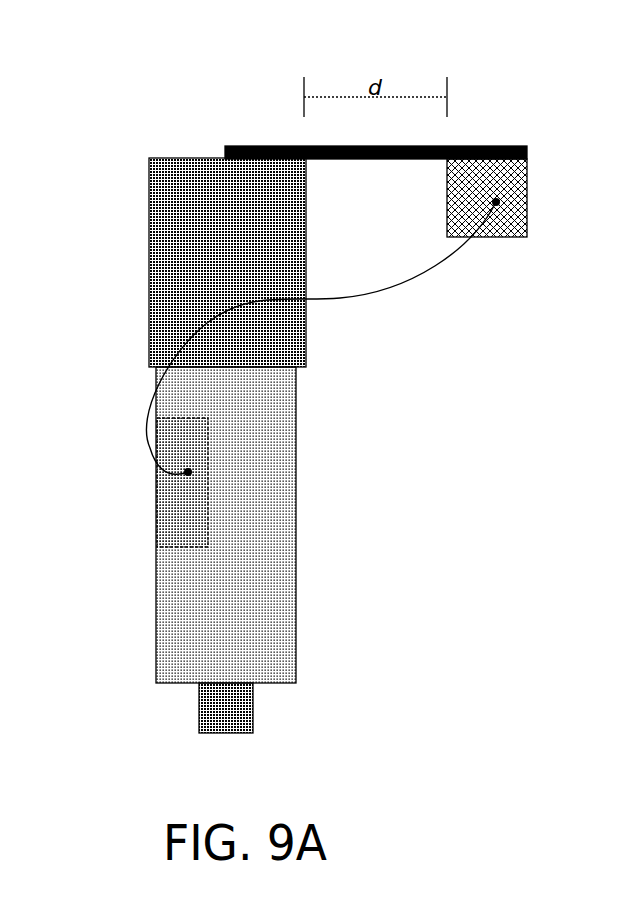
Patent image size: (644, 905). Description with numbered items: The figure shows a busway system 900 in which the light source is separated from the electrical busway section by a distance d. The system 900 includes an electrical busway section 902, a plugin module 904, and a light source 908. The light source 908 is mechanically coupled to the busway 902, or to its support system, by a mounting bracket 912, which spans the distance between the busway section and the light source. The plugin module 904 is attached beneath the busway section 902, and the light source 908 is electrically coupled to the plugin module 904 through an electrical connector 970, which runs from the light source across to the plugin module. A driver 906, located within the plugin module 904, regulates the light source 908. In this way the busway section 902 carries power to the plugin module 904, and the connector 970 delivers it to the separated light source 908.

The busway system 900 is at (156, 92).
The electrical busway section 902 is at (142, 197).
The plugin module 904 is at (306, 503).
The driver 906 is at (156, 521).
The light source 908 is at (540, 236).
The mounting bracket 912 is at (510, 136).
The electrical connector 970 is at (382, 300).